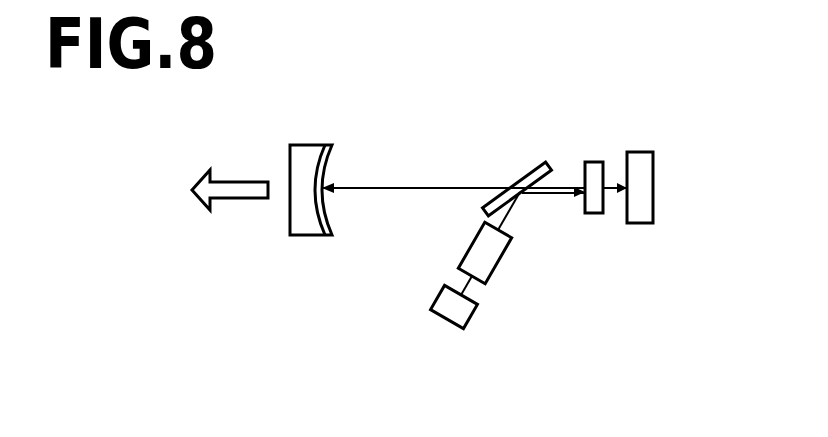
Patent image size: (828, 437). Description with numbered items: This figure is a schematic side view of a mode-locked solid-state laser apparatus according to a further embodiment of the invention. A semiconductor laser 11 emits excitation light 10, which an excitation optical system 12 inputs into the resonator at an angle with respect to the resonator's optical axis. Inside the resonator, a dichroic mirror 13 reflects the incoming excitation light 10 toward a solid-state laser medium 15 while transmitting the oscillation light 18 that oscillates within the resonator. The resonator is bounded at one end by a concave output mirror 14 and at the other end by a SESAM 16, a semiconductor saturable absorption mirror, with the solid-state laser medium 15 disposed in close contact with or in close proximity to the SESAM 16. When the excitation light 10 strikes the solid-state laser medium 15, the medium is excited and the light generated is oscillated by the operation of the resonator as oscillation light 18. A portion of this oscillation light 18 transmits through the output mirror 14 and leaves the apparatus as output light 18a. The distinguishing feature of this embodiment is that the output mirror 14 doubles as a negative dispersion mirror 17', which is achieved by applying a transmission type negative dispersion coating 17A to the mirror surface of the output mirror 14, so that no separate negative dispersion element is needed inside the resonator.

The excitation light 10 is at (548, 193).
The semiconductor laser 11 is at (468, 322).
The excitation optical system 12 is at (497, 268).
The dichroic mirror 13 is at (517, 180).
The concave output mirror 14 is at (296, 212).
The solid-state laser medium 15 is at (593, 162).
The SESAM 16 is at (638, 152).
The negative dispersion mirror 17' is at (283, 243).
The transmission type negative dispersion coating 17A is at (331, 222).
The oscillation light 18 is at (390, 190).
The output light 18a is at (237, 182).